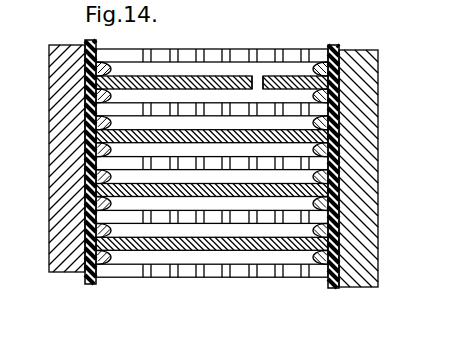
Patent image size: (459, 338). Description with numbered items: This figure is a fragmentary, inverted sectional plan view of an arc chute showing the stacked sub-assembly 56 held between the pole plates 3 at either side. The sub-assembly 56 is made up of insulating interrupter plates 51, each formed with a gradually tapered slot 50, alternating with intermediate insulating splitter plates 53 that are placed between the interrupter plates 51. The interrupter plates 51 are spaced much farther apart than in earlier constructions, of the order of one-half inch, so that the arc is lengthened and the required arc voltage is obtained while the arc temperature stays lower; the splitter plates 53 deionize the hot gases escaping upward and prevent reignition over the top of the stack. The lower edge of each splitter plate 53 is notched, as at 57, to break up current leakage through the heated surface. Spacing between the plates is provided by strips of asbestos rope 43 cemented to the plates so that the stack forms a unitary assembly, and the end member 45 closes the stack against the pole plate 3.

The pole plate 3 is at (63, 271).
The asbestos rope 43 is at (100, 277).
The end plate 45 is at (331, 287).
The gradually tapered slot 50 is at (254, 78).
The insulating interrupter plate 51 is at (139, 77).
The insulating splitter plate 53 is at (267, 57).
The sub-assembly 56 is at (212, 169).
The notch 57 is at (255, 279).